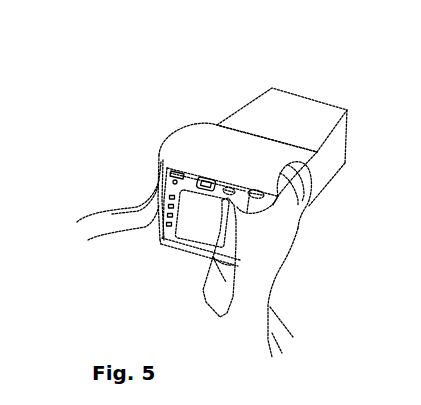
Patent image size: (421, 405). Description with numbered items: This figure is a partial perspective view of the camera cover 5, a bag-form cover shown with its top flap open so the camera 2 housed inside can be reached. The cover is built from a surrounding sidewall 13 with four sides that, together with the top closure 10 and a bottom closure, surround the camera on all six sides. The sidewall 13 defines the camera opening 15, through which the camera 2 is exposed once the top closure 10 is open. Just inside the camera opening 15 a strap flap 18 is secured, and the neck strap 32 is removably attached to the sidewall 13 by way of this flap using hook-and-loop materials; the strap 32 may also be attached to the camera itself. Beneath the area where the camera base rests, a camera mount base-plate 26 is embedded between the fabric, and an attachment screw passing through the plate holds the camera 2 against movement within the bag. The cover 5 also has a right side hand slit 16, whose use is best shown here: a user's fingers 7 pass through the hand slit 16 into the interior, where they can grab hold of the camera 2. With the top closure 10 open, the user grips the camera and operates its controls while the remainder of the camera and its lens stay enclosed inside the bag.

The camera cover 5 is at (316, 67).
The surrounding sidewall 13 is at (277, 117).
The top closure 10 is at (188, 147).
The camera opening 15 is at (163, 175).
The strap flap 18 is at (135, 205).
The neck strap 32 is at (123, 225).
The camera mount base-plate 26 is at (182, 248).
The camera 2 is at (193, 220).
The right side hand slit 16 is at (302, 213).
The fingers 7 is at (292, 218).